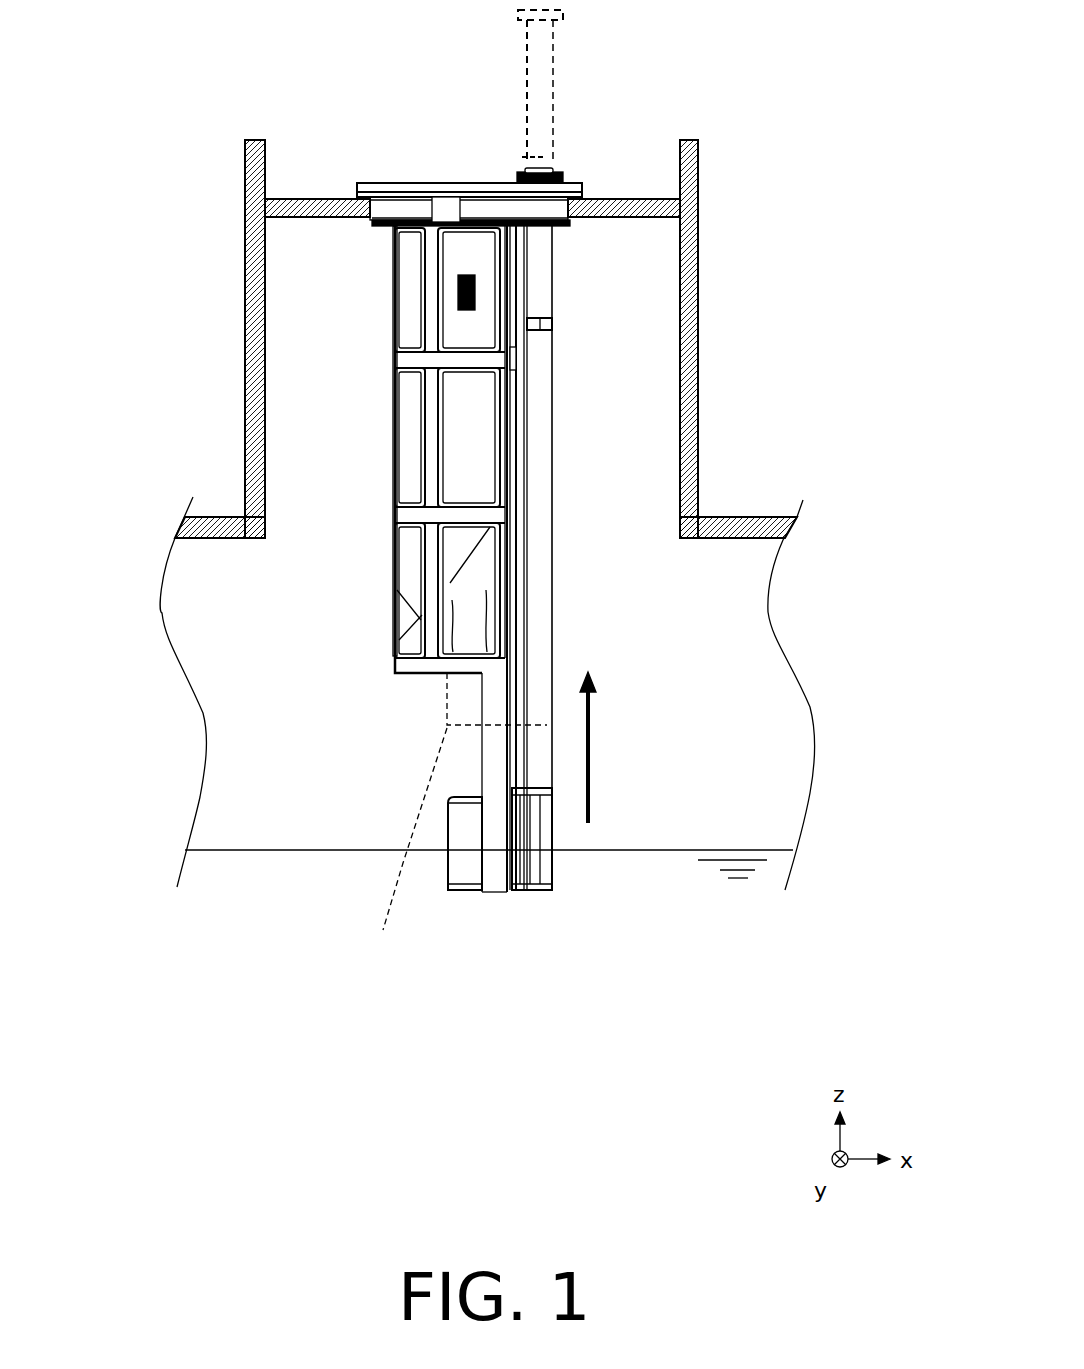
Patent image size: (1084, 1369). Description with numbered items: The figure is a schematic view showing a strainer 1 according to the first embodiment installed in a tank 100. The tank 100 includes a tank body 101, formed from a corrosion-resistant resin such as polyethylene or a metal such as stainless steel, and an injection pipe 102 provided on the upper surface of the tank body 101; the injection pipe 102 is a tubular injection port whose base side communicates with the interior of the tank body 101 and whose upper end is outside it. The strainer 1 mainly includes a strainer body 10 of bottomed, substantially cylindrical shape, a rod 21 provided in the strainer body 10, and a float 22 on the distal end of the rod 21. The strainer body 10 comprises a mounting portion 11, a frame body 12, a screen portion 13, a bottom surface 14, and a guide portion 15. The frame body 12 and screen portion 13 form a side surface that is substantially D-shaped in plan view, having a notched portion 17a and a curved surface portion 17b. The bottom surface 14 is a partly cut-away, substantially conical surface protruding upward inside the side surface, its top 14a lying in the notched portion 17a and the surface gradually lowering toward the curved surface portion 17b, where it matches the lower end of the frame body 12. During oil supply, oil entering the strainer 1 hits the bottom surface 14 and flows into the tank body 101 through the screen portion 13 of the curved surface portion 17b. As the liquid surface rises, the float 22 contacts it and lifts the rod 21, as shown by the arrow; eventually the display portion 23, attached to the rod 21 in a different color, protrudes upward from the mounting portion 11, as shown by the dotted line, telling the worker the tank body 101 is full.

The strainer 1 is at (405, 131).
The strainer body 10 is at (142, 243).
The mounting portion 11 is at (385, 208).
The frame body 12 is at (402, 362).
The screen portion 13 is at (410, 430).
The bottom surface 14 is at (468, 600).
The top 14a is at (515, 515).
The guide portion 15 is at (500, 715).
The notched portion 17a is at (513, 405).
The curved surface portion 17b is at (393, 312).
The rod 21 is at (548, 47).
The float 22 is at (465, 873).
The display portion 23 is at (540, 318).
The tank 100 is at (722, 453).
The tank body 101 is at (735, 518).
The injection pipe 102 is at (700, 238).